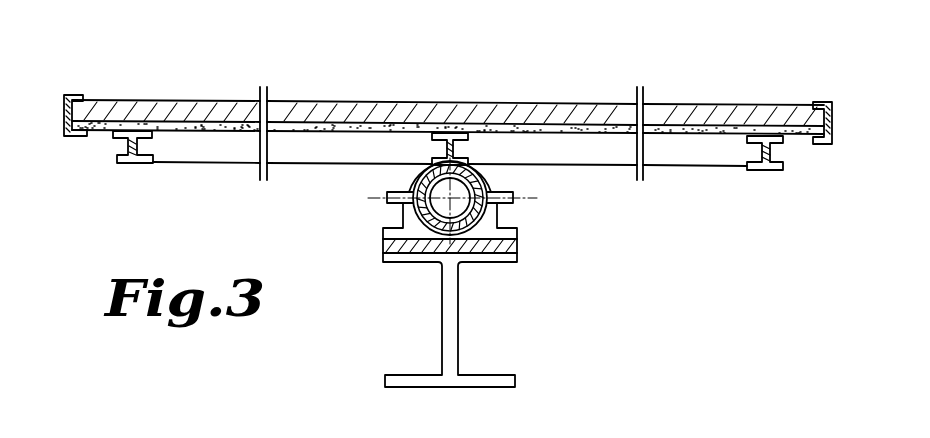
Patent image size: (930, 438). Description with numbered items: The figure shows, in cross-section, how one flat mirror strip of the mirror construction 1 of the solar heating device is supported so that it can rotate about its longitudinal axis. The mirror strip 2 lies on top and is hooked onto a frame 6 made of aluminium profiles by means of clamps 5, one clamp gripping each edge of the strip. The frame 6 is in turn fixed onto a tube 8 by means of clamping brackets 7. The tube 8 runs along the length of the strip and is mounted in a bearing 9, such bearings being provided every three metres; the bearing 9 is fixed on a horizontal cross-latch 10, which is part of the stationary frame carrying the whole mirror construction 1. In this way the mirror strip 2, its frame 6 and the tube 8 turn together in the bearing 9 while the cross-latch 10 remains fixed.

The mirror construction 1 is at (208, 47).
The mirror strip 2 is at (705, 102).
The clamp 5 is at (63, 108).
The frame 6 is at (208, 152).
The clamping bracket 7 is at (405, 207).
The tube 8 is at (478, 222).
The bearing 9 is at (422, 225).
The horizontal cross-latch 10 is at (517, 248).